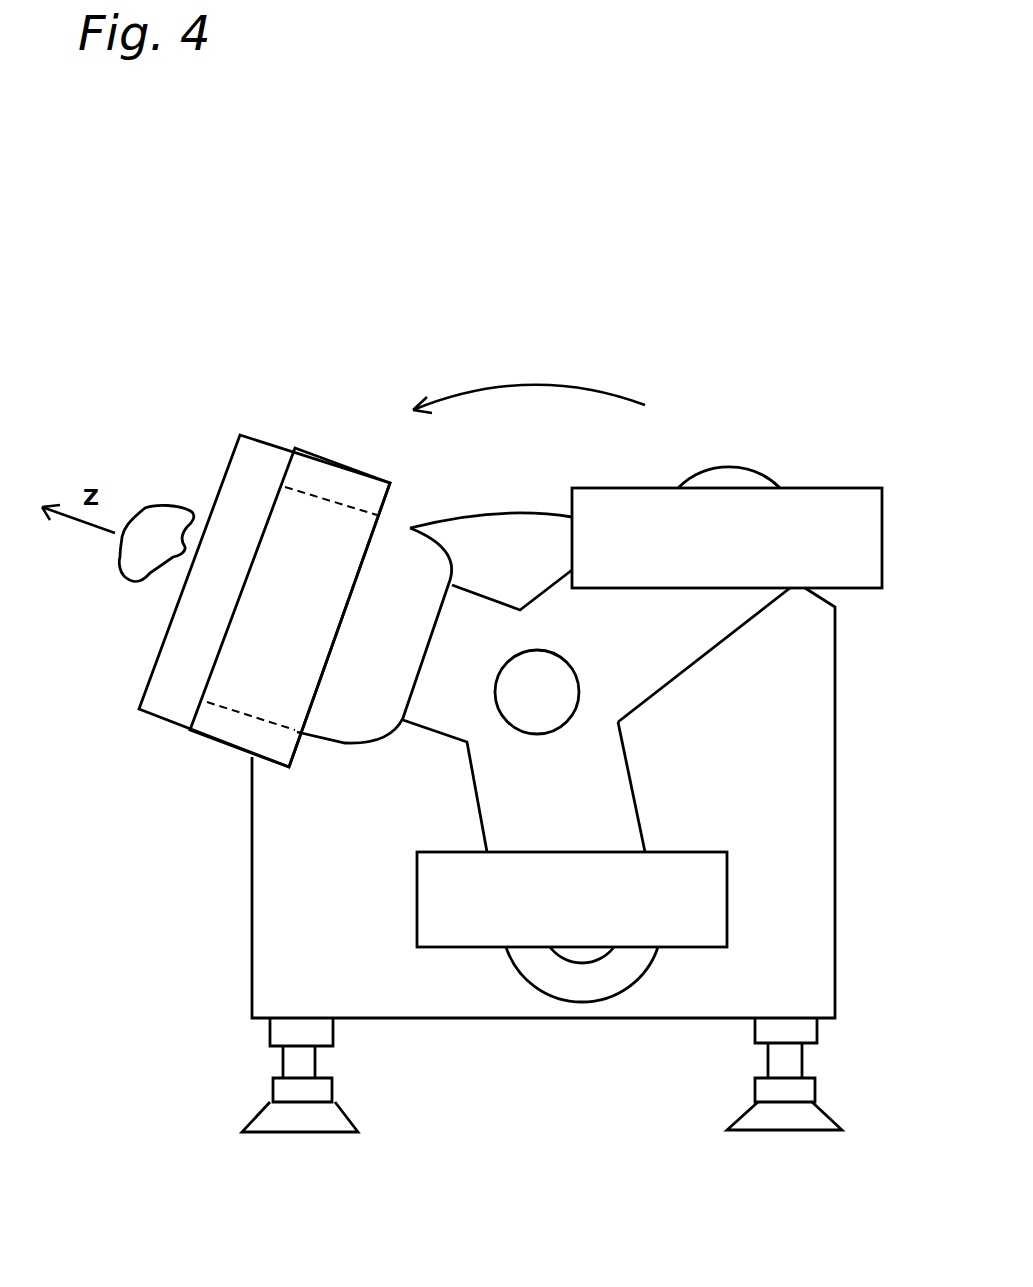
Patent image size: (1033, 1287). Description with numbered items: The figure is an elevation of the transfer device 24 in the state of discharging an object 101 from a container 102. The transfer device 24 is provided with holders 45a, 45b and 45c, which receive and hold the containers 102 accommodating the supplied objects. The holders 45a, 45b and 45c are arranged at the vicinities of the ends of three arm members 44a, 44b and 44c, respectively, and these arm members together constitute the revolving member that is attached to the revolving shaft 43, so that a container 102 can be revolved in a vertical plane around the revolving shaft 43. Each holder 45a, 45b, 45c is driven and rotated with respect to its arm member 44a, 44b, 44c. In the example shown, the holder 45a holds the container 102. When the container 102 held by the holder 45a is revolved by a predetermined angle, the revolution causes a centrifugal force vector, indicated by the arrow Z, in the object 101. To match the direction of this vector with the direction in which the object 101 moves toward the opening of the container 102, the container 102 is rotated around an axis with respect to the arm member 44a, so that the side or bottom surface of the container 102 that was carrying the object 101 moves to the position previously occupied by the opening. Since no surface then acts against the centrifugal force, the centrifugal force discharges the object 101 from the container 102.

The transfer device 24 is at (757, 357).
The revolving shaft 43 is at (542, 710).
The arm member 44a is at (443, 703).
The arm member 44b is at (710, 620).
The arm member 44c is at (610, 813).
The holder 45a is at (347, 492).
The holder 45b is at (820, 515).
The holder 45c is at (670, 875).
The object 101 is at (162, 518).
The container 102 is at (240, 490).